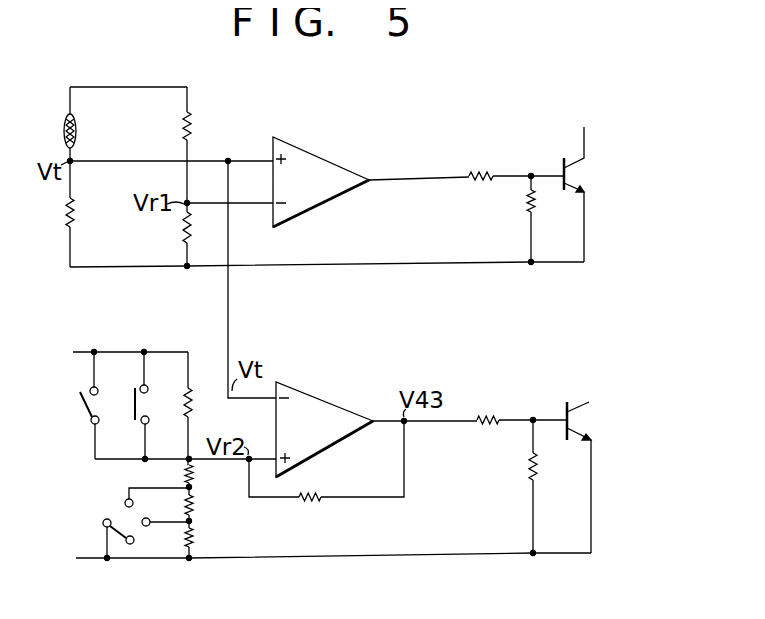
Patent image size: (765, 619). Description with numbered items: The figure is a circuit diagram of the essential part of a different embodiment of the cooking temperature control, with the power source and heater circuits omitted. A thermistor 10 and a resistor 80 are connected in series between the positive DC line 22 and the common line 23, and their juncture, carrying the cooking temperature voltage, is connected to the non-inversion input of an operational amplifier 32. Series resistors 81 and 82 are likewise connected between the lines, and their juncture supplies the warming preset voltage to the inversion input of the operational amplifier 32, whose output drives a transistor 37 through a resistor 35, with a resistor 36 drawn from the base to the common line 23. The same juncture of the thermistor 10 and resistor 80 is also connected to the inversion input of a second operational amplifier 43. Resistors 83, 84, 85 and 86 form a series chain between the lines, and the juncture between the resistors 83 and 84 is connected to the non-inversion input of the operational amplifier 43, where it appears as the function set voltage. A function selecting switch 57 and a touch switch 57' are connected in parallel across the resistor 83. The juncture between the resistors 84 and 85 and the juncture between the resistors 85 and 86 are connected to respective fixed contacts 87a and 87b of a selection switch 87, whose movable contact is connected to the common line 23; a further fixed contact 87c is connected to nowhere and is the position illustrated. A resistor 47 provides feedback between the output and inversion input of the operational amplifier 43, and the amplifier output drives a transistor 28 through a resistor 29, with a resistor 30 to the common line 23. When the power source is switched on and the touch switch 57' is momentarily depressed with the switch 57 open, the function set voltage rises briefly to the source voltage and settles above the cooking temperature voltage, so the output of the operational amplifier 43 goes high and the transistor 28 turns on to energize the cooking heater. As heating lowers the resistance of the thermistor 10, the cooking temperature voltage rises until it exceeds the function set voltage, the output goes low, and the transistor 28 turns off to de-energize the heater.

The thermistor 10 is at (63, 118).
The positive DC line 22 is at (124, 88).
The common line 23 is at (115, 267).
The transistor 28 is at (585, 413).
The resistor 29 is at (488, 413).
The resistor 30 is at (526, 468).
The operational amplifier 32 is at (312, 152).
The resistor 35 is at (480, 182).
The resistor 36 is at (525, 198).
The transistor 37 is at (586, 178).
The operational amplifier 43 is at (339, 411).
The resistor 47 is at (313, 501).
The function selecting switch 57 is at (75, 405).
The touch switch 57' is at (125, 405).
The resistor 80 is at (65, 214).
The resistor 81 is at (189, 112).
The resistor 82 is at (183, 221).
The resistor 83 is at (199, 405).
The resistor 84 is at (196, 477).
The resistor 85 is at (196, 506).
The resistor 86 is at (196, 539).
The selection switch 87 is at (117, 559).
The fixed contact 87a is at (124, 497).
The fixed contact 87b is at (164, 512).
The fixed contact 87c is at (152, 547).